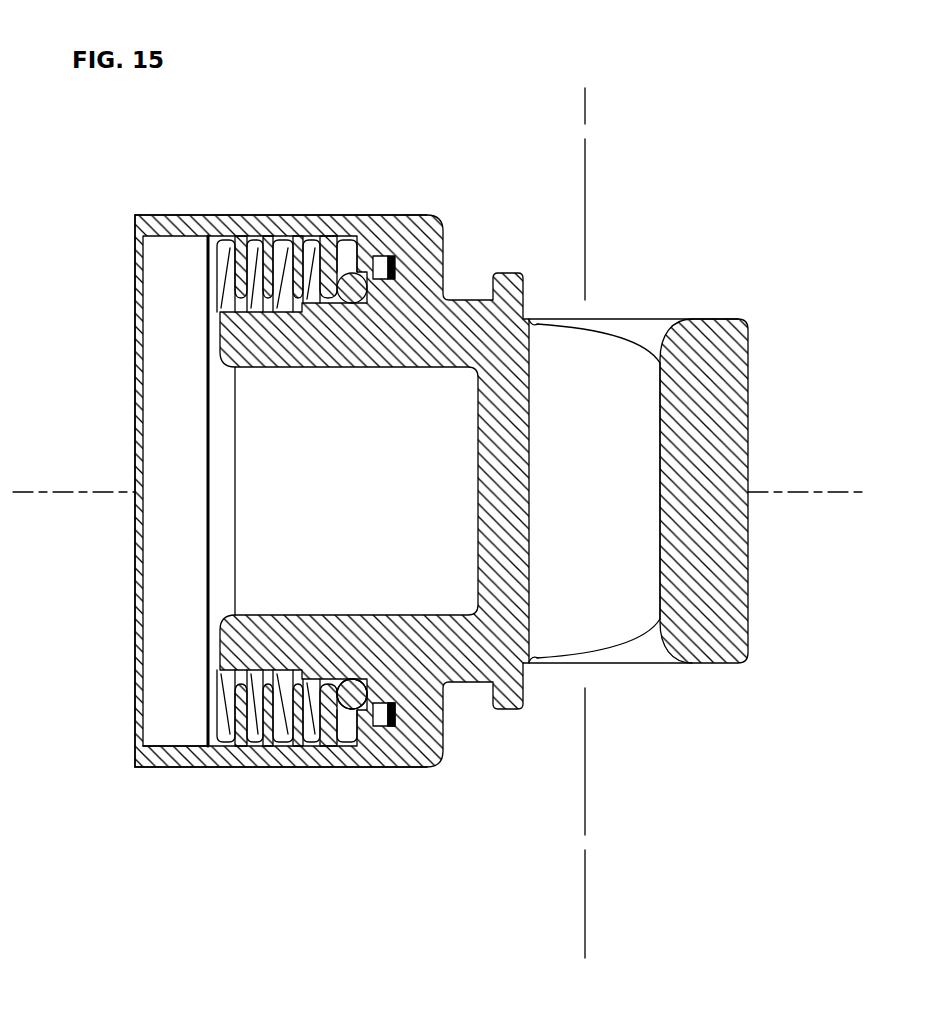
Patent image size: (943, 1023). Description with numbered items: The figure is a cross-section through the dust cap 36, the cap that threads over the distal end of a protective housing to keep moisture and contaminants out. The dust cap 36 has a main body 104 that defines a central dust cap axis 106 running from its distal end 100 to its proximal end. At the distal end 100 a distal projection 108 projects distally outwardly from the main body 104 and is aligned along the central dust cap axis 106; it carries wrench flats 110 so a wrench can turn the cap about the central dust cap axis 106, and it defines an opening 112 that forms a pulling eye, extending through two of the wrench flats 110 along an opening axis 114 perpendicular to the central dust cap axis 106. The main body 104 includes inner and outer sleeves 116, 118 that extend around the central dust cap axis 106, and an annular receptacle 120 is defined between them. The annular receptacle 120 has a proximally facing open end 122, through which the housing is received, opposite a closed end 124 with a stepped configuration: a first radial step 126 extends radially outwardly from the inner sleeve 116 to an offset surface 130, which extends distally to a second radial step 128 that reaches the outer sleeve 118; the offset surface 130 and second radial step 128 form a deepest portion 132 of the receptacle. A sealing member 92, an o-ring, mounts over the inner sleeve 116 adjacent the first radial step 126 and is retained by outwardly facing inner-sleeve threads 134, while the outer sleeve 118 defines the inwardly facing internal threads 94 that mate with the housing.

The dust cap 36 is at (410, 174).
The sealing member 92 is at (343, 690).
The internal threads 94 is at (235, 258).
The distal end 100 is at (750, 333).
The main body 104 is at (447, 684).
The central dust cap axis 106 is at (138, 214).
The distal projection 108 is at (681, 316).
The wrench flats 110 is at (568, 321).
The opening 112 is at (598, 600).
The opening axis 114 is at (588, 121).
The inner sleeve 116 is at (222, 338).
The outer sleeve 118 is at (135, 222).
The annular receptacle 120 is at (281, 231).
The open end 122 is at (220, 729).
The closed end 124 is at (388, 728).
The first radial step 126 is at (362, 690).
The second radial step 128 is at (393, 713).
The offset surface 130 is at (375, 696).
The deepest portion 132 is at (393, 266).
The inner-sleeve threads 134 is at (253, 231).